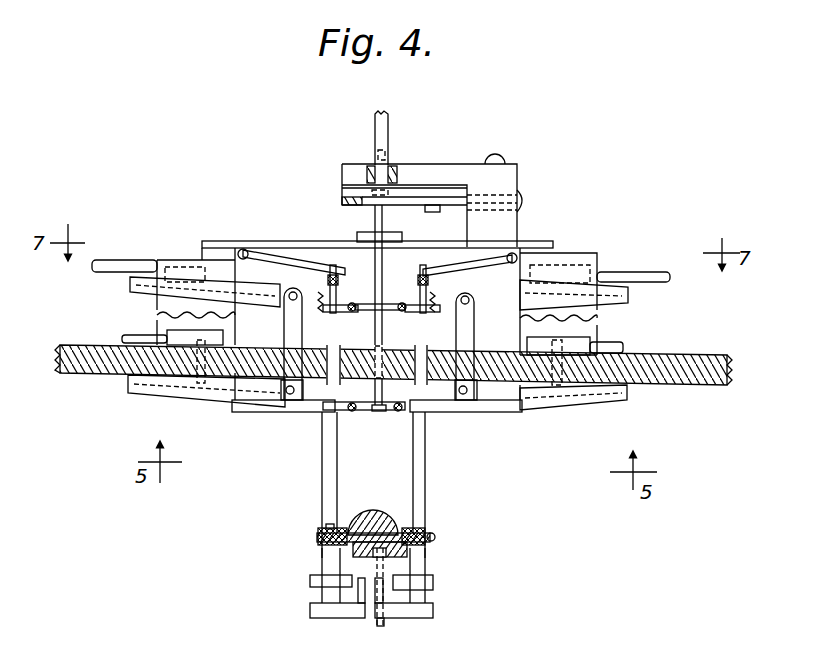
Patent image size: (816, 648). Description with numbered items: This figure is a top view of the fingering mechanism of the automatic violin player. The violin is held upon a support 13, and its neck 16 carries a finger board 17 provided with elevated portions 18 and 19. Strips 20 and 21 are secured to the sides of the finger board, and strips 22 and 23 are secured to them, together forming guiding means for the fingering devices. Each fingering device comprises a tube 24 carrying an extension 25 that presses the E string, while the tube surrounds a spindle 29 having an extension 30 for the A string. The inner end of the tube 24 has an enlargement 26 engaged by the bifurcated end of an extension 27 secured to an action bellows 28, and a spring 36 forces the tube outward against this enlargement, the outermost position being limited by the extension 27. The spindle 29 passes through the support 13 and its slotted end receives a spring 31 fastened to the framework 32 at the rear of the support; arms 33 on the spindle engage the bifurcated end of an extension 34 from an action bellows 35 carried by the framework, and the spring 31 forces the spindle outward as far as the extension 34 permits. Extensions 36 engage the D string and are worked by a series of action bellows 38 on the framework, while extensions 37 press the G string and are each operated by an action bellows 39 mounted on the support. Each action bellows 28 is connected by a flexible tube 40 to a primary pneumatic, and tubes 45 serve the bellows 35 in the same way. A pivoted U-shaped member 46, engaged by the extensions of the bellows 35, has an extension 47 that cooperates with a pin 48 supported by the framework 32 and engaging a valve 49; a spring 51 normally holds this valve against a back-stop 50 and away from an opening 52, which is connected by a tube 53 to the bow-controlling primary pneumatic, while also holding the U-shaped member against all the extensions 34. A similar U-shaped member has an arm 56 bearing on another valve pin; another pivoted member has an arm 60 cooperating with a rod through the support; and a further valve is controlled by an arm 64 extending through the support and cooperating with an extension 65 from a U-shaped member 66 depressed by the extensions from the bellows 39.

The support 13 is at (727, 376).
The neck 16 is at (378, 520).
The finger board 17 is at (400, 523).
The elevated portion 18 is at (400, 566).
The elevated portion 19 is at (348, 563).
The strip 20 is at (417, 536).
The strip 21 is at (330, 524).
The strip 22 is at (435, 538).
The strip 23 is at (318, 532).
The tube 24 is at (322, 458).
The extension 25 is at (416, 592).
The enlargement 26 is at (440, 413).
The extension 27 is at (488, 413).
The action bellows 28 is at (600, 396).
The spindle 29 is at (424, 338).
The extension 30 is at (380, 623).
The spring 31 is at (467, 263).
The framework 32 is at (545, 278).
The arms 33 is at (404, 303).
The extension 34 is at (478, 318).
The action bellows 35 is at (612, 298).
The spring / extension 36 is at (397, 412).
The extension 37 is at (362, 566).
The action bellows 38 is at (135, 289).
The action bellows 39 is at (160, 393).
The flexible tube 40 is at (625, 348).
The tubes 45 is at (638, 268).
The U-shaped member 46 is at (405, 313).
The extension 47 is at (378, 296).
The pin 48 is at (384, 262).
The valve 49 is at (388, 199).
The back-stop 50 is at (345, 207).
The spring 51 is at (462, 205).
The opening 52 is at (394, 172).
The tube 53 is at (375, 128).
The arm 56 is at (360, 314).
The arm 60 is at (385, 420).
The arm 64 is at (372, 445).
The extension 65 is at (354, 412).
The U-shaped member 66 is at (325, 396).
The A string A is at (380, 563).
The D string D is at (363, 590).
The E string E is at (440, 583).
The G string G is at (353, 550).